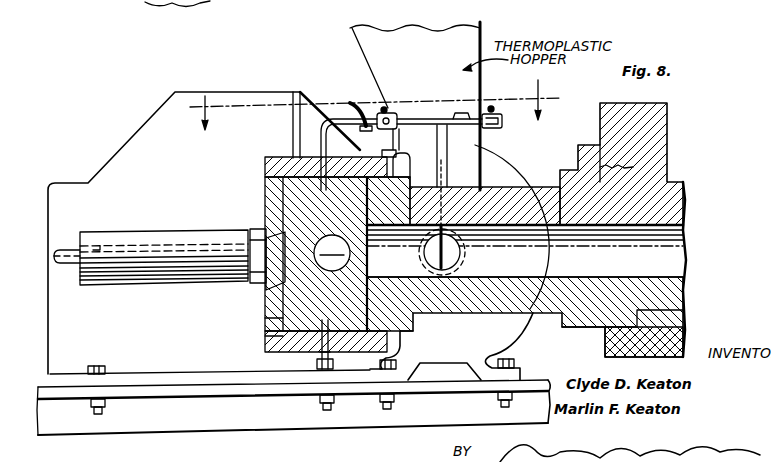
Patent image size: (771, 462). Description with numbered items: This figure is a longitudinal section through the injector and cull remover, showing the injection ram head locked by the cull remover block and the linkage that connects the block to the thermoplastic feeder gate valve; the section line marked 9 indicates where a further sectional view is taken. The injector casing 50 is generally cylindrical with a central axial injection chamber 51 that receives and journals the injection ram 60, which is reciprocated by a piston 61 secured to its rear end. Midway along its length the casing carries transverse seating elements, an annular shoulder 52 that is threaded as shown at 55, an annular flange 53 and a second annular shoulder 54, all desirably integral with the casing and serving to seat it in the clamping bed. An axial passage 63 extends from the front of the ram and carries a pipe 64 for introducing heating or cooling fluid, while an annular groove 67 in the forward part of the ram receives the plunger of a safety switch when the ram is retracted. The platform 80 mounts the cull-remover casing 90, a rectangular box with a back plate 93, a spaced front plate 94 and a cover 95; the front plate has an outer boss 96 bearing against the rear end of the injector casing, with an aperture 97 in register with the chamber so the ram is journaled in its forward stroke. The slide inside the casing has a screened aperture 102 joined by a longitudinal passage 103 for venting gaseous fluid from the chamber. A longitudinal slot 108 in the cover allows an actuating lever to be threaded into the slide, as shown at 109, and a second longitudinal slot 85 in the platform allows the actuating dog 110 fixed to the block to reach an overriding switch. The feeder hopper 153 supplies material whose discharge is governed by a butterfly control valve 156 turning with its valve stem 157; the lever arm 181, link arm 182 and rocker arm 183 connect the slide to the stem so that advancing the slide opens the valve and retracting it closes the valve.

The section line 9- 9 is at (373, 110).
The injector casing 50 is at (692, 200).
The injection chamber 51 is at (673, 247).
The annular shoulder 52 is at (637, 300).
The annular flange 53 is at (586, 351).
The second annular shoulder 54 is at (556, 325).
The screw threads 55 is at (606, 143).
The injection ram 60 is at (175, 294).
The piston 61 is at (267, 291).
The axial passage 63 is at (97, 250).
The pipe 64 is at (64, 248).
The annular groove 67 is at (252, 229).
The platform 80 is at (265, 352).
The second longitudinal slot 85 is at (312, 359).
The cull-remover casing 90 is at (266, 320).
The back plate 93 is at (266, 337).
The front plate 94 is at (411, 328).
The cover 95 is at (265, 170).
The outer boss 96 is at (410, 172).
The aperture 97 is at (381, 264).
The screened aperture 102 is at (334, 262).
The longitudinal passage 103 is at (332, 253).
The longitudinal slot 108 is at (321, 131).
The actuating lever threaded engagement 109 is at (283, 158).
The actuating dog 110 is at (334, 364).
The hopper 153 is at (410, 41).
The butterfly control valve 156 is at (455, 252).
The valve stem 157 is at (415, 166).
The lever arm 181 is at (356, 110).
The link arm 182 is at (420, 118).
The rocker arm 183 is at (492, 113).